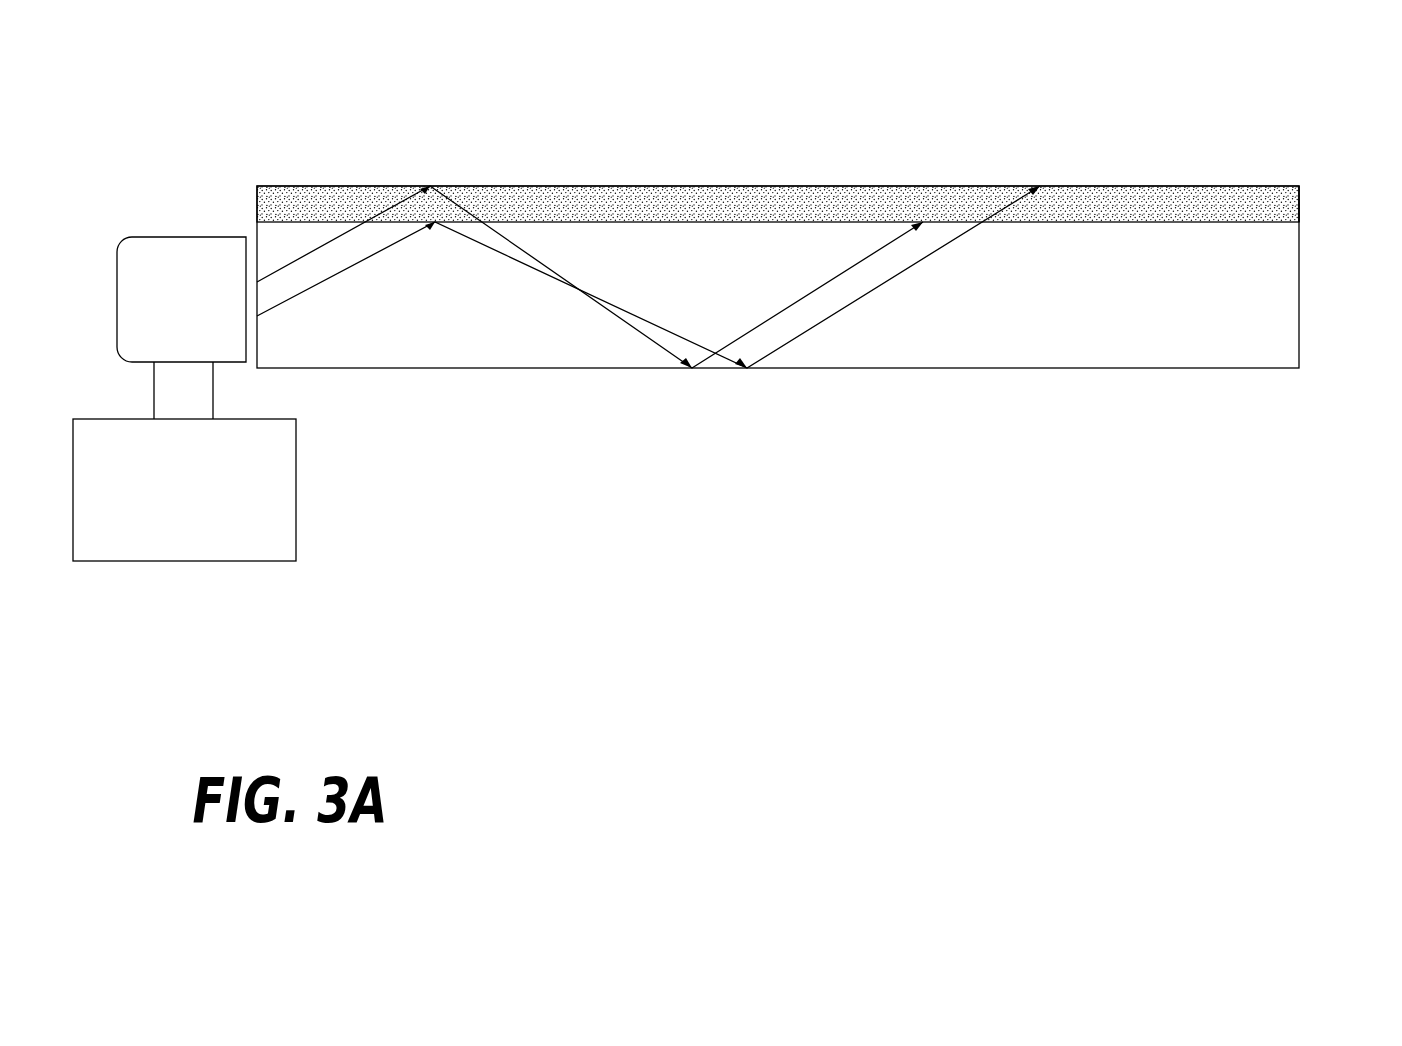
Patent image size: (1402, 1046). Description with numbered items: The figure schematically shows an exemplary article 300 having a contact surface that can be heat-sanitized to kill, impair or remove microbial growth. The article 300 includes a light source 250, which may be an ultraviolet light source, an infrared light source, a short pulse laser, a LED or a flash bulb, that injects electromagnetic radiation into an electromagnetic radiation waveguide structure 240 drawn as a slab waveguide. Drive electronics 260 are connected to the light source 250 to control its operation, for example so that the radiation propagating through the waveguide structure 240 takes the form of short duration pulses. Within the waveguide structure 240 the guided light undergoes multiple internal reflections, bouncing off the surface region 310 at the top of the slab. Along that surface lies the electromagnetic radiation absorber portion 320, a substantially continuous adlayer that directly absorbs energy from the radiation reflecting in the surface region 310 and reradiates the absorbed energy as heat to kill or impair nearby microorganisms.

The article 300 is at (398, 42).
The electromagnetic radiation waveguide structure 240 is at (1163, 284).
The light source 250 is at (157, 309).
The drive electronics 260 is at (203, 497).
The surface region 310 is at (730, 177).
The electromagnetic radiation absorber portion 320 is at (1290, 197).